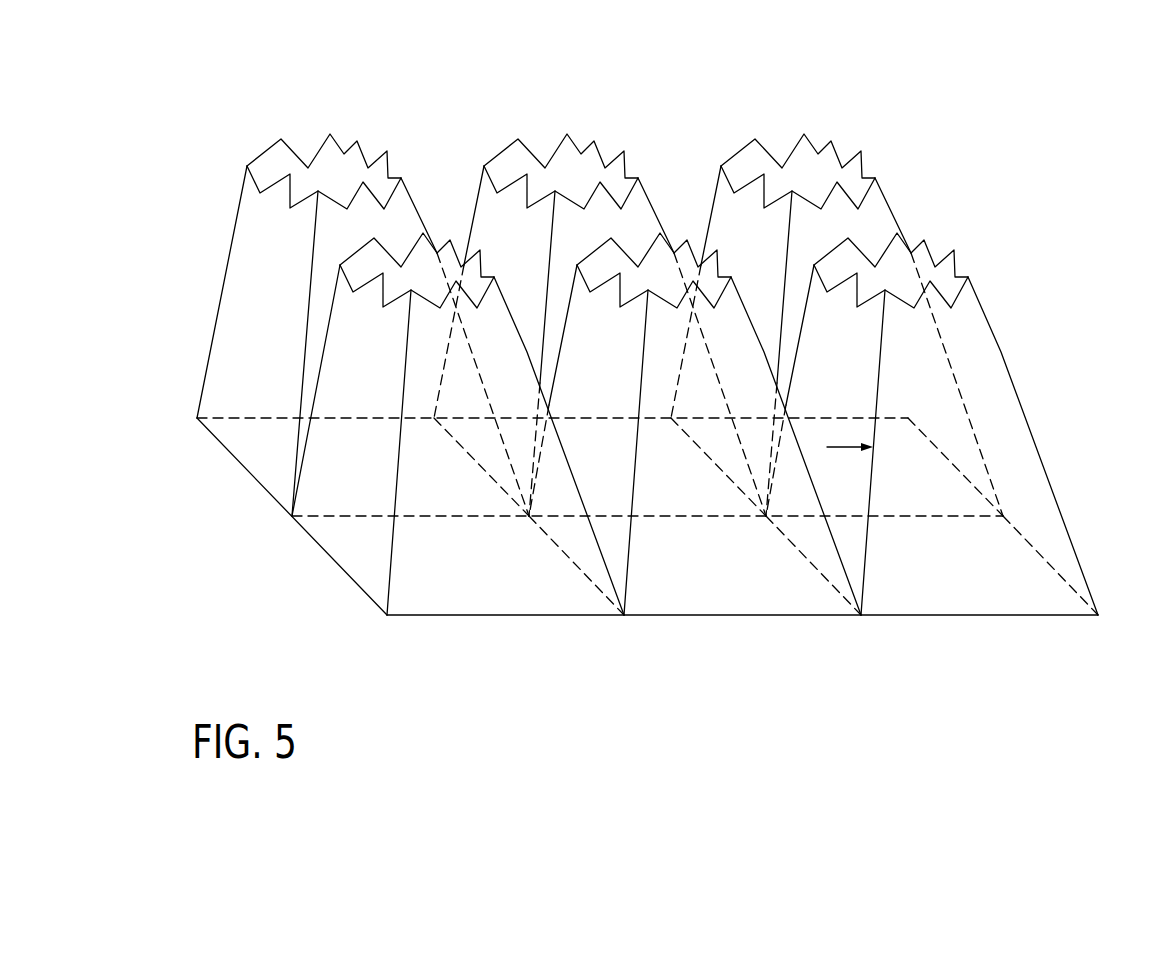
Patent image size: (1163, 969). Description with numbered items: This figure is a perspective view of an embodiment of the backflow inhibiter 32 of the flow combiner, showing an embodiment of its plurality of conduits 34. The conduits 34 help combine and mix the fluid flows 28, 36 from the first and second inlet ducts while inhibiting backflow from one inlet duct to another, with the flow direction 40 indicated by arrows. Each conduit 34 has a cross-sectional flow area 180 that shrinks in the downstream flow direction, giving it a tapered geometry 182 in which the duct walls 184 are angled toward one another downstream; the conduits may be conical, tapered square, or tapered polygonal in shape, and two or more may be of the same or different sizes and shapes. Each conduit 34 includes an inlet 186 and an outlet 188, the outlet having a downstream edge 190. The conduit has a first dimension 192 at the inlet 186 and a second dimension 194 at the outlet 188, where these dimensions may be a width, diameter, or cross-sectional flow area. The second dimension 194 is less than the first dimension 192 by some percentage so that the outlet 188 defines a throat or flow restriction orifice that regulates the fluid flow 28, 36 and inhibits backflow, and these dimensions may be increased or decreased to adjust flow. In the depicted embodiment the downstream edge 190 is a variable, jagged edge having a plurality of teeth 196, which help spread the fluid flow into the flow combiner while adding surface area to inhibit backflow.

The fluid flow 28 is at (791, 755).
The backflow inhibiter 32 is at (994, 115).
The conduit 34 is at (257, 450).
The fluid flow 36 is at (506, 730).
The fluid flow 40 is at (322, 40).
The cross-sectional flow area 180 is at (1046, 447).
The tapered geometry 182 is at (1037, 408).
The duct walls 184 is at (878, 364).
The inlet 186 is at (1038, 624).
The outlet 188 is at (964, 258).
The downstream edge 190 is at (437, 252).
The first dimension 192 is at (912, 618).
The second dimension 194 is at (915, 236).
The teeth 196 is at (329, 134).